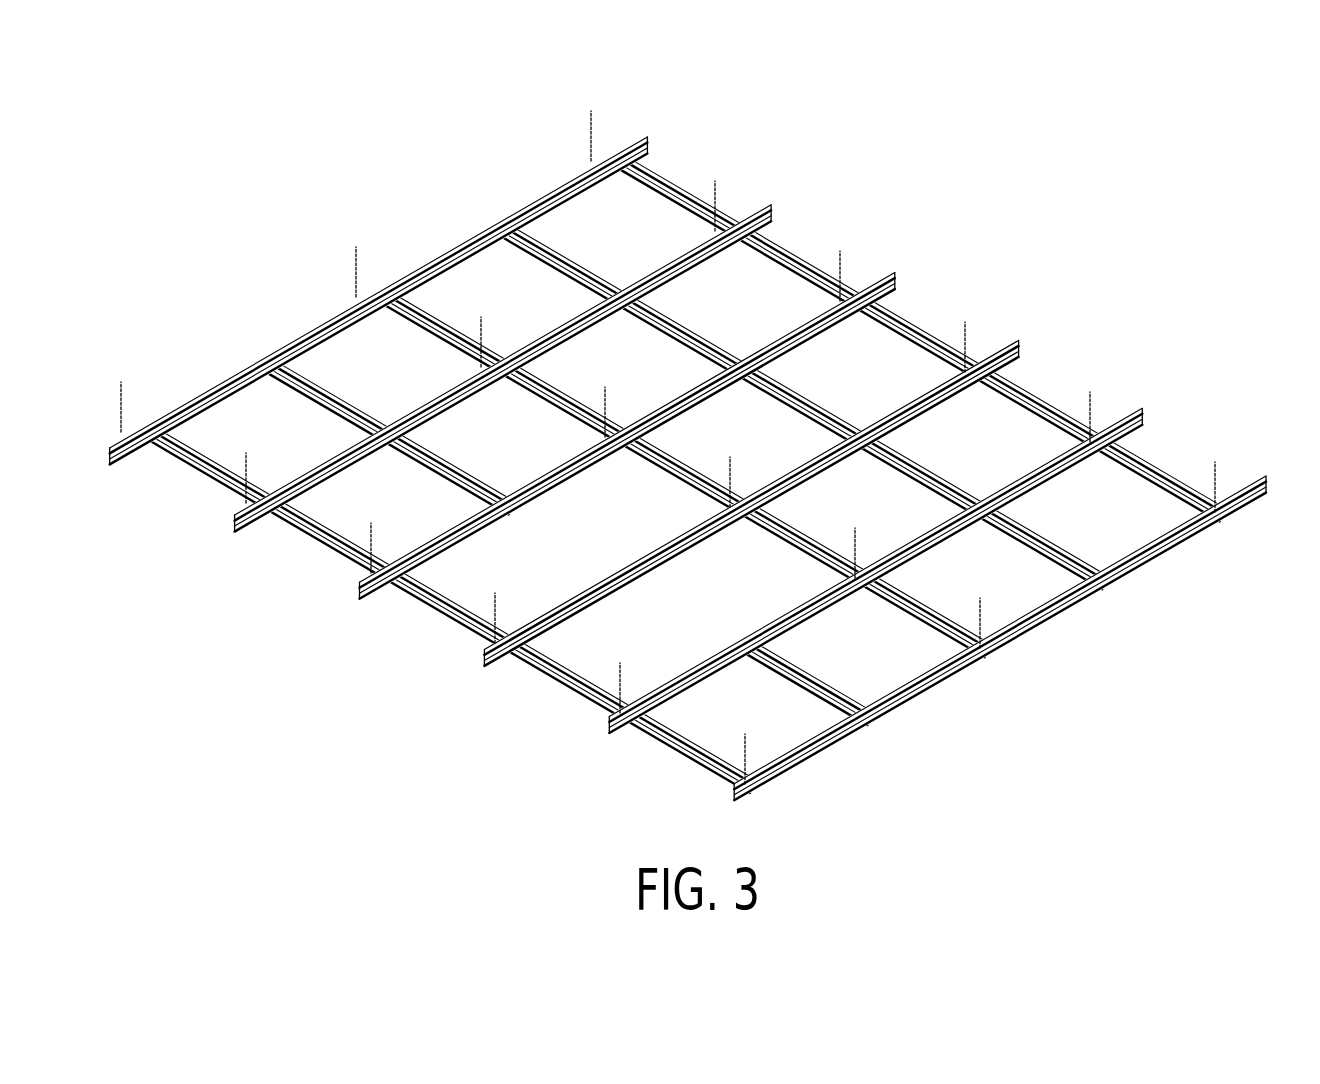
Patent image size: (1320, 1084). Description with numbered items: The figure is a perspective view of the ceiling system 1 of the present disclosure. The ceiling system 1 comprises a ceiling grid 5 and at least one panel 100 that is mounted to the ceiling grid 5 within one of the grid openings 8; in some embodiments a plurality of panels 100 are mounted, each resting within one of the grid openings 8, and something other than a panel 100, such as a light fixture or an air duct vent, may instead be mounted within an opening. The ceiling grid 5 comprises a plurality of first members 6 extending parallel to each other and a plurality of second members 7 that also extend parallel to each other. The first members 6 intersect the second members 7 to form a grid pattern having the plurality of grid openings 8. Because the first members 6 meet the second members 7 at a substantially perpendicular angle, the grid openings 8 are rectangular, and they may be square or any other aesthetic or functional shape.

The ceiling system 1 is at (705, 441).
The ceiling grid 5 is at (688, 456).
The first members 6 is at (1068, 540).
The second members 7 is at (405, 425).
The grid openings 8 is at (935, 362).
The panel 100 is at (592, 665).